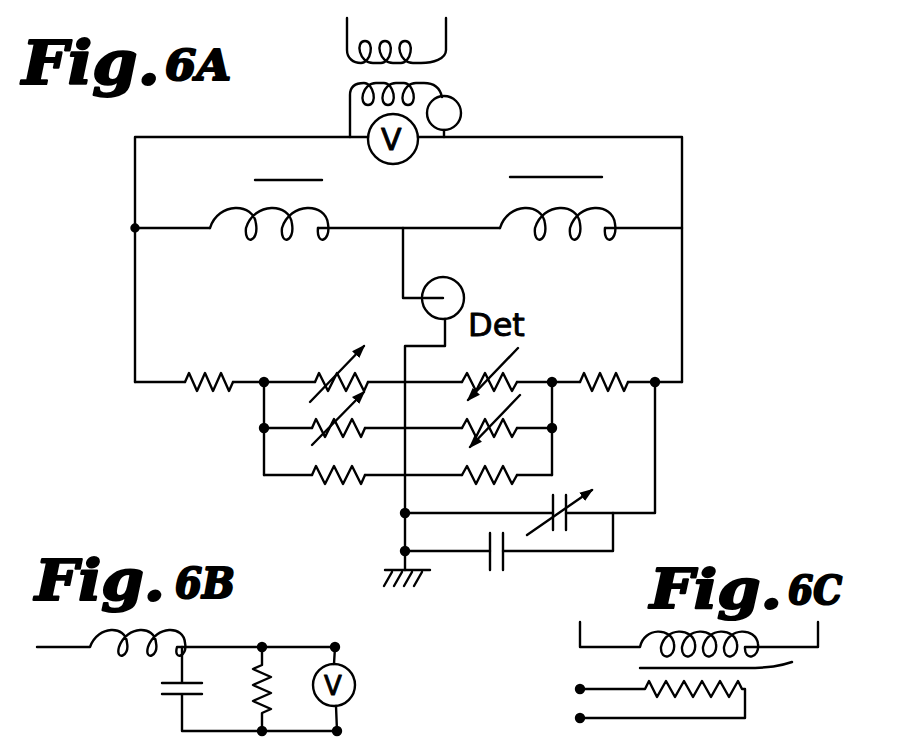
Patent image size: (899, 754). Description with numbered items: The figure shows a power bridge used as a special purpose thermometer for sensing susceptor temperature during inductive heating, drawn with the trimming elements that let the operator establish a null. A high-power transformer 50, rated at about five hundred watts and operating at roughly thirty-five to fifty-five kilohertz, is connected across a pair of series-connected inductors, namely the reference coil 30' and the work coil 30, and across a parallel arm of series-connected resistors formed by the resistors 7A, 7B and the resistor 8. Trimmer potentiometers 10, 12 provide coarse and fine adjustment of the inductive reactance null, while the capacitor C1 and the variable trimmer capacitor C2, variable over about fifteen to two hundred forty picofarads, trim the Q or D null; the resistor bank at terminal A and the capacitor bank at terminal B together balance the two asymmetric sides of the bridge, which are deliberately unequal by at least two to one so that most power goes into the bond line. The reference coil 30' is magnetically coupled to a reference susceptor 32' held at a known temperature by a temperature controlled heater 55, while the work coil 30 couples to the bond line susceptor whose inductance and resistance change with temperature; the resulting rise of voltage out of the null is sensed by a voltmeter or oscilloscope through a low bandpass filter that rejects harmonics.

In FIG. 6A, the high-power transformer 50 is at (452, 76).
In FIG. 6A, the reference coil 30' is at (244, 215).
In FIG. 6C, the reference coil 30' is at (699, 620).
In FIG. 6A, the work coil 30 is at (574, 215).
In FIG. 6A, the bridge resistor 7A is at (216, 358).
In FIG. 6A, the bridge resistor 7B is at (607, 357).
In FIG. 6A, the variable resistor 10 is at (414, 374).
In FIG. 6A, the variable resistor 12 is at (416, 418).
In FIG. 6A, the resistor 8 is at (414, 495).
In FIG. 6A, the capacitor C1 is at (498, 570).
In FIG. 6A, the variable trimmer capacitor C2 is at (580, 505).
In FIG. 6A, the resistor bank terminal A is at (327, 554).
In FIG. 6A, the capacitor bank terminal B is at (559, 574).
In FIG. 6C, the reference susceptor 32' is at (741, 671).
In FIG. 6C, the temperature controlled heater 55 is at (748, 689).